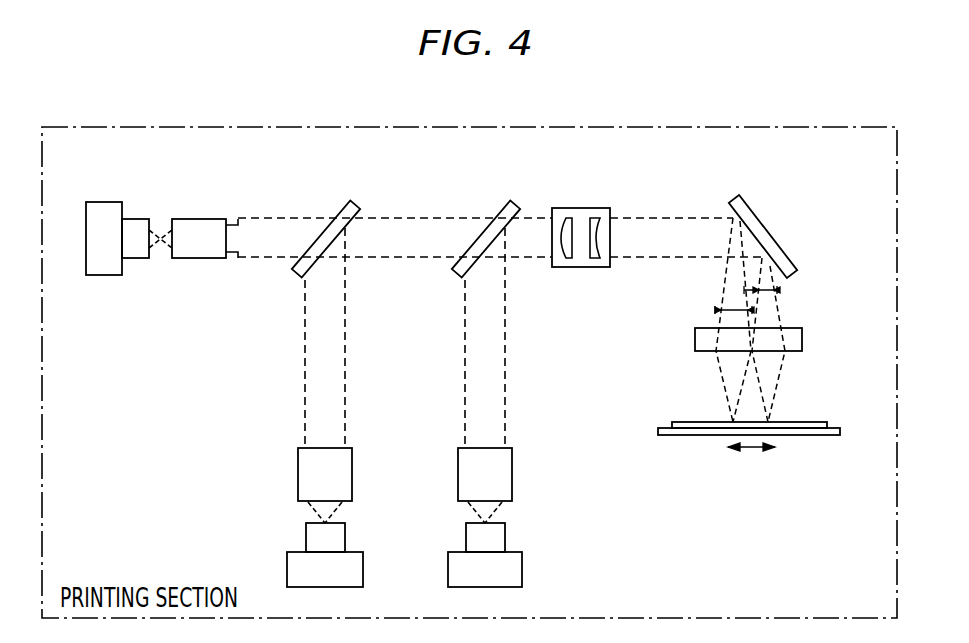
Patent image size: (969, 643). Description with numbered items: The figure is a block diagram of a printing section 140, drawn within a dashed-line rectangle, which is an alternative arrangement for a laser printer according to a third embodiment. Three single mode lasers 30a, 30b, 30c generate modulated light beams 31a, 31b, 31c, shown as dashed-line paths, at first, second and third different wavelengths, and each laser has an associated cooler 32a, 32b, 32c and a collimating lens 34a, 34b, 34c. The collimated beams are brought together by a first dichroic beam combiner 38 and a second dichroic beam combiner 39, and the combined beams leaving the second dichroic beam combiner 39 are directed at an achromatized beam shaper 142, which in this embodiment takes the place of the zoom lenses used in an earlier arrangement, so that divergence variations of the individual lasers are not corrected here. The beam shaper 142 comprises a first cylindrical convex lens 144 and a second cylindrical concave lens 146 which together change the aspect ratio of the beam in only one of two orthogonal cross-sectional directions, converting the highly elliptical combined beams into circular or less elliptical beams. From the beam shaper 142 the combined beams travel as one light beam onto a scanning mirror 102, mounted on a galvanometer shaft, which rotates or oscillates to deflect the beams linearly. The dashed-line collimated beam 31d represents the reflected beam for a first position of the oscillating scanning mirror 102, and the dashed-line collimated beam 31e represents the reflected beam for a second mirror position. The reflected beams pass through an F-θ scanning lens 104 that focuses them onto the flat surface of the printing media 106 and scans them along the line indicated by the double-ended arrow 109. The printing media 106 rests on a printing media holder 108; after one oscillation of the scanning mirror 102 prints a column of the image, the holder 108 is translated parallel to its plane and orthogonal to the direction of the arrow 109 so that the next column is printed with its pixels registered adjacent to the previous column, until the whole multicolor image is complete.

The printing section 140 is at (222, 127).
The single mode laser 30a is at (105, 202).
The modulated light beam 31a is at (162, 229).
The cooler 32a is at (137, 258).
The collimating lens 34a is at (196, 258).
The first dichroic beam combiner 38 is at (340, 206).
The second dichroic beam combiner 39 is at (502, 206).
The achromatized beam shaper 142 is at (578, 242).
The first cylindrical convex lens 144 is at (570, 268).
The second cylindrical concave lens 146 is at (600, 268).
The scanning mirror 102 is at (770, 237).
The collimated beam 31d is at (777, 290).
The collimated beam 31e is at (715, 310).
The F-θ scanning lens 104 is at (802, 340).
The printing media 106 is at (795, 422).
The printing media holder 108 is at (822, 436).
The double-ended arrow 109 is at (752, 448).
The collimating lens 34b is at (298, 470).
The modulated light beam 31b is at (330, 512).
The cooler 32b is at (306, 535).
The single mode laser 30b is at (287, 565).
The collimating lens 34c is at (512, 470).
The modulated light beam 31c is at (493, 508).
The cooler 32c is at (505, 535).
The single mode laser 30c is at (522, 565).